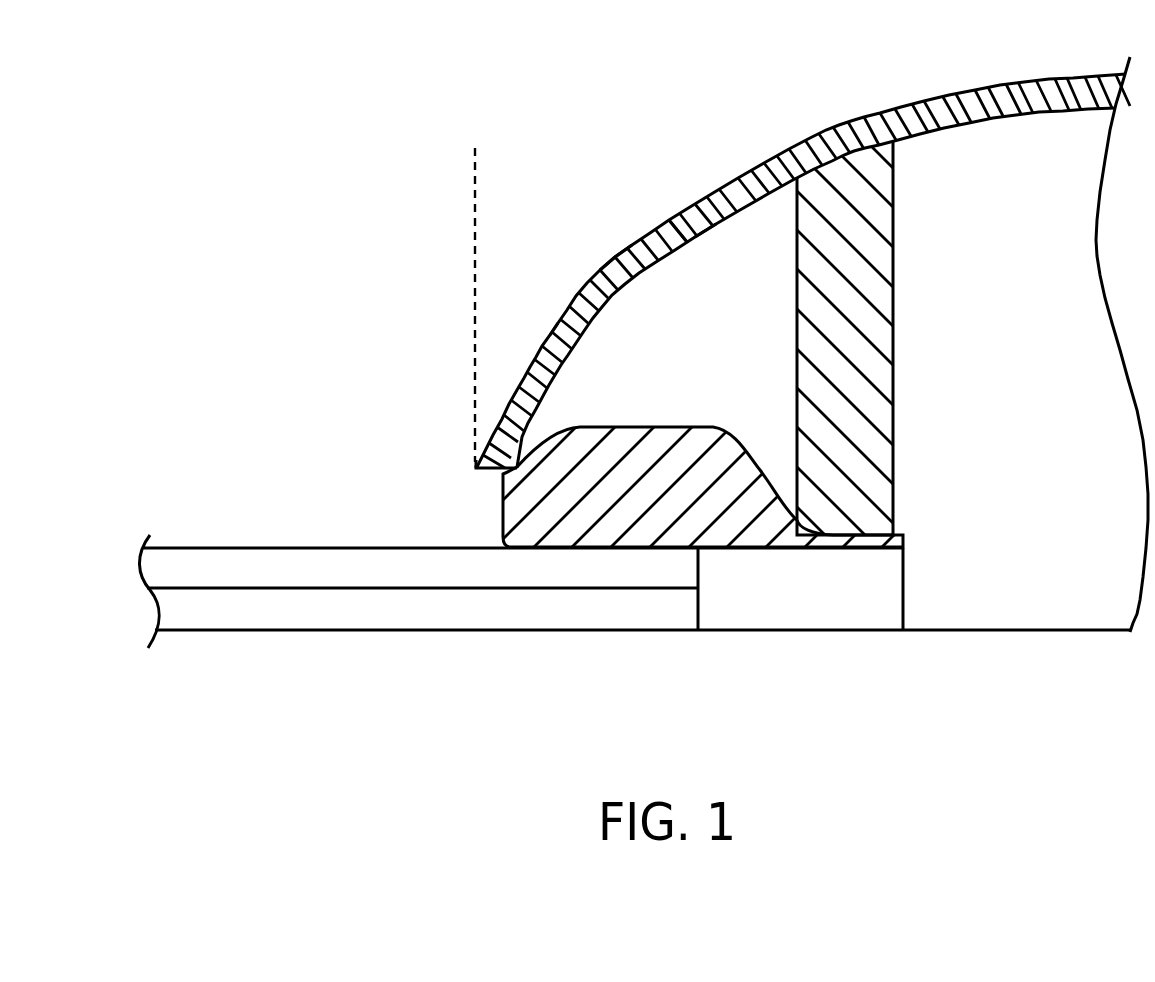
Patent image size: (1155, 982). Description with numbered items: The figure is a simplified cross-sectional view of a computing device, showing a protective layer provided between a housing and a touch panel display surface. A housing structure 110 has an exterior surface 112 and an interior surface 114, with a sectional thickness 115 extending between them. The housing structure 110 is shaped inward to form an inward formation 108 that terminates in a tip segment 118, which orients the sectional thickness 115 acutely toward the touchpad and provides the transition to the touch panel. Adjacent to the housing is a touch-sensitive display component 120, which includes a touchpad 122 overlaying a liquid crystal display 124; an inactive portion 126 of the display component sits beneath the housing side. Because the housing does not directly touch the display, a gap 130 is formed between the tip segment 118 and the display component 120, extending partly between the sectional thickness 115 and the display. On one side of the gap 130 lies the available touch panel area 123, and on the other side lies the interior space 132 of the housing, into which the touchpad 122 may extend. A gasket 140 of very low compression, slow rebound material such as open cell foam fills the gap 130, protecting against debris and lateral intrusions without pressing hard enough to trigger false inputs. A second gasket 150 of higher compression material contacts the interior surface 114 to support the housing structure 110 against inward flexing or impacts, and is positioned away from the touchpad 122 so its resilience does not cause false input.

The inward formation 108 is at (706, 180).
The housing structure 110 is at (518, 312).
The exterior surface 112 is at (625, 253).
The interior surface 114 is at (705, 233).
The sectional thickness 115 is at (678, 223).
The tip segment 118 is at (460, 449).
The touch-sensitive display component 120 is at (216, 511).
The touchpad 122 is at (313, 563).
The available touch panel area 123 is at (461, 193).
The liquid crystal display 124 is at (298, 615).
The inactive portion 126 is at (812, 610).
The gap 130 is at (432, 457).
The interior space 132 is at (1038, 266).
The gasket 140 is at (653, 425).
The second gasket 150 is at (880, 385).